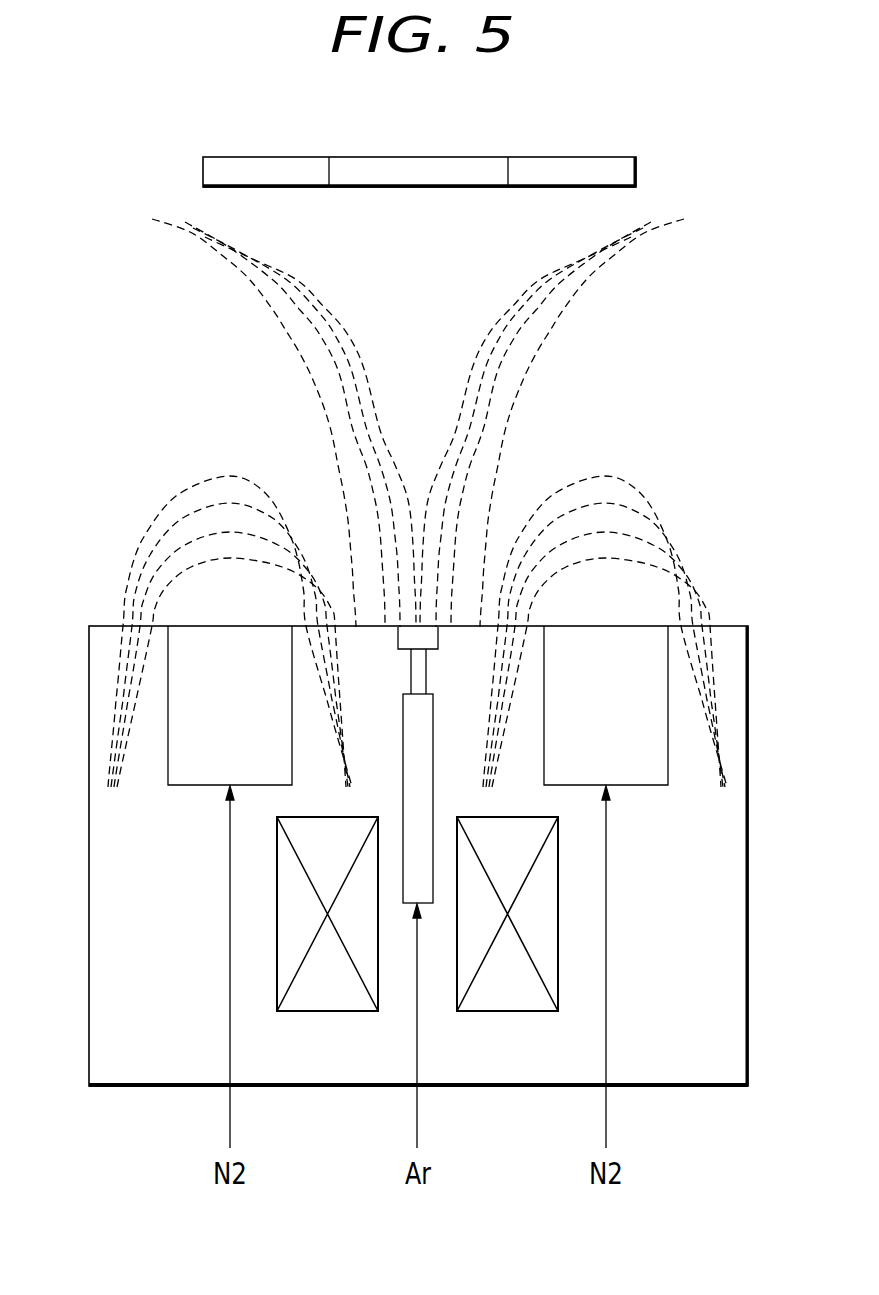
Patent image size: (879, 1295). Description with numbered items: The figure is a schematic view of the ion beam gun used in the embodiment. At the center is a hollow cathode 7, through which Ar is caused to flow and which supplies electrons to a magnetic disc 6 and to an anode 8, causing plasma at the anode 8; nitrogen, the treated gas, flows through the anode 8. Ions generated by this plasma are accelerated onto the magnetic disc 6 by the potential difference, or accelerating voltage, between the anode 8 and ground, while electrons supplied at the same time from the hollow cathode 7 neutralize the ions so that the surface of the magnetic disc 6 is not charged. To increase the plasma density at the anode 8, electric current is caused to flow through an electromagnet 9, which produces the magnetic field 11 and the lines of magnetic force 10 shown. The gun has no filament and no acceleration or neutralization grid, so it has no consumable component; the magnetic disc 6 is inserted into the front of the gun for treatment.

The magnetic disc 6 is at (636, 172).
The hollow cathode 7 is at (420, 627).
The anode 8 is at (233, 626).
The electromagnet 9 is at (509, 1003).
The line of magnetic force 10 is at (683, 533).
The magnetic field 11 is at (557, 313).